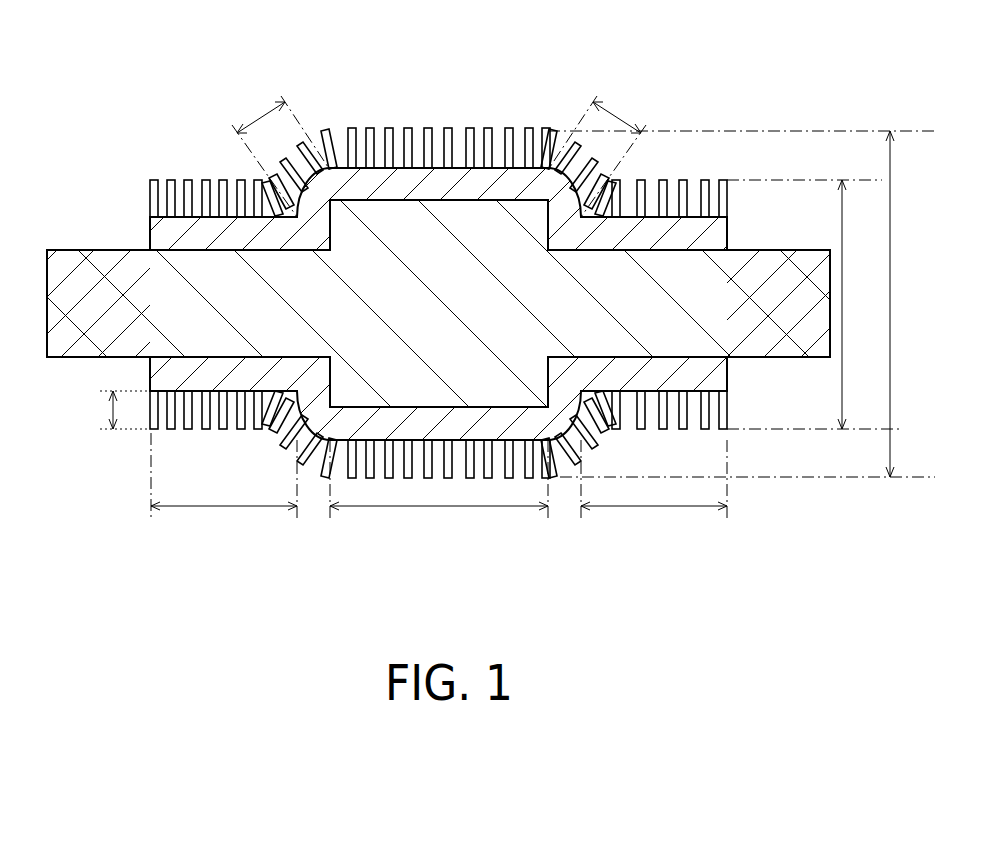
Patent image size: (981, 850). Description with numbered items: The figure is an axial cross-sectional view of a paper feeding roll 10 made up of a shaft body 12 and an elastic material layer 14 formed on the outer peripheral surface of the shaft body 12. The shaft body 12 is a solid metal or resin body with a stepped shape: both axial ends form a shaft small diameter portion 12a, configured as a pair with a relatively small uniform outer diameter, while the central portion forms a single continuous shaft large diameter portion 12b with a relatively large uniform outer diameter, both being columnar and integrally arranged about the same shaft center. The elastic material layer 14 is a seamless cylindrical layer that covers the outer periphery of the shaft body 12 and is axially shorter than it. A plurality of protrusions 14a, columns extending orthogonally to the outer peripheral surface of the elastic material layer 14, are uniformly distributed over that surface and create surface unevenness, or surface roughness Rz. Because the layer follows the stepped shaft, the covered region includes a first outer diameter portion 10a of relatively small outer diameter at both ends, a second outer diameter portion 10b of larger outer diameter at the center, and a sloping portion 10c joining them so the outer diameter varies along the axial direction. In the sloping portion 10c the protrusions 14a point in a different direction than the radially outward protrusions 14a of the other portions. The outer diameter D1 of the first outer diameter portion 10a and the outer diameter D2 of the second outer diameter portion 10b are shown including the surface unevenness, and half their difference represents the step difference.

The paper feeding roll 10 is at (490, 290).
The first outer diameter portion 10a is at (439, 494).
The second outer diameter portion 10b is at (439, 498).
The sloping portion 10c is at (439, 145).
The shaft body 12 is at (490, 215).
The shaft small diameter portion 12a is at (122, 275).
The shaft large diameter portion 12b is at (445, 280).
The elastic material layer 14 is at (490, 264).
The protrusions 14a is at (185, 180).
The outer diameter of the first outer diameter portion D1 is at (813, 304).
The outer diameter of the second outer diameter portion D2 is at (741, 304).
The surface roughness Rz is at (107, 412).